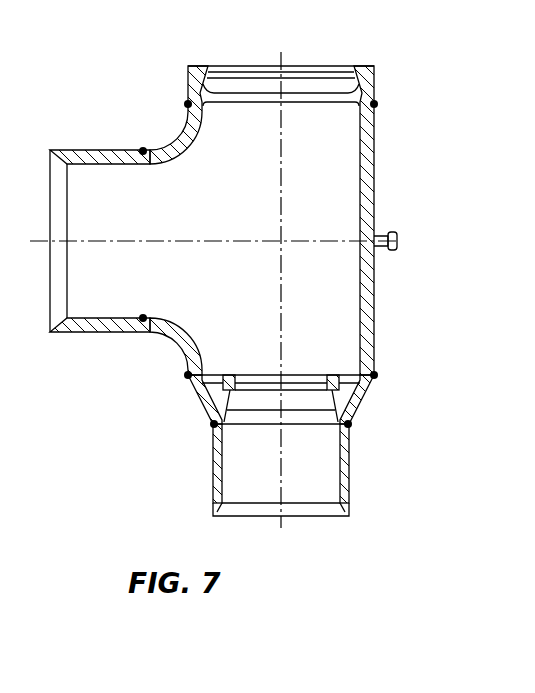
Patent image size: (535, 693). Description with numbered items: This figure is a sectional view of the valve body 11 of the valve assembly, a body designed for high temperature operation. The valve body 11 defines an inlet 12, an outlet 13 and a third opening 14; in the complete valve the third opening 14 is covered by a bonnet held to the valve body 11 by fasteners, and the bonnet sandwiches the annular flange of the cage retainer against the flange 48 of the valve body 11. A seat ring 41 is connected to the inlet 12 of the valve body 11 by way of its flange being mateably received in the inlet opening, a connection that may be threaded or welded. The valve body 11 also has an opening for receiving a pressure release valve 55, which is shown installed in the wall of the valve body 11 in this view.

The valve body 11 is at (377, 129).
The inlet 12 is at (337, 482).
The outlet 13 is at (80, 316).
The third opening 14 is at (337, 90).
The seat ring 41 is at (299, 366).
The flange 48 is at (213, 90).
The pressure release valve 55 is at (393, 232).